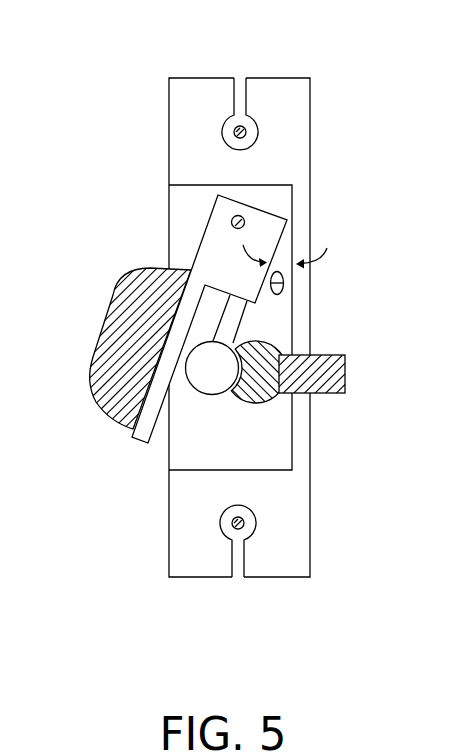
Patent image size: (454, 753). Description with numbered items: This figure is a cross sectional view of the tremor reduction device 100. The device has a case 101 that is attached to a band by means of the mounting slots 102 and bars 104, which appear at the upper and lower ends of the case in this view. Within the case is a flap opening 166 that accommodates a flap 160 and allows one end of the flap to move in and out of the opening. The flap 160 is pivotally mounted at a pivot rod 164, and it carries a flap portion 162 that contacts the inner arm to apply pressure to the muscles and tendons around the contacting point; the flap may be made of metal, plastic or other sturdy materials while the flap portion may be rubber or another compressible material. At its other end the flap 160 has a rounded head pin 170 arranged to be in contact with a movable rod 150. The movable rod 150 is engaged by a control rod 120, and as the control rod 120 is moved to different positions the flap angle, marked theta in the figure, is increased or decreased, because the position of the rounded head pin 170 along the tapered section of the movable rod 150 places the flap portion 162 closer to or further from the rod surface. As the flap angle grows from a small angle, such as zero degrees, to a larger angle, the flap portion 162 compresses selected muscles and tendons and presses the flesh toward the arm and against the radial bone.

The tremor reduction device 100 is at (187, 61).
The case 101 is at (302, 165).
The mounting slots 102 is at (238, 82).
The bars 104 is at (237, 131).
The control rod 120 is at (327, 392).
The movable rod 150 is at (277, 347).
The flap 160 is at (210, 240).
The flap portion 162 is at (93, 353).
The pivot rod 164 is at (245, 220).
The flap opening 166 is at (285, 460).
The rounded head pin 170 is at (207, 390).